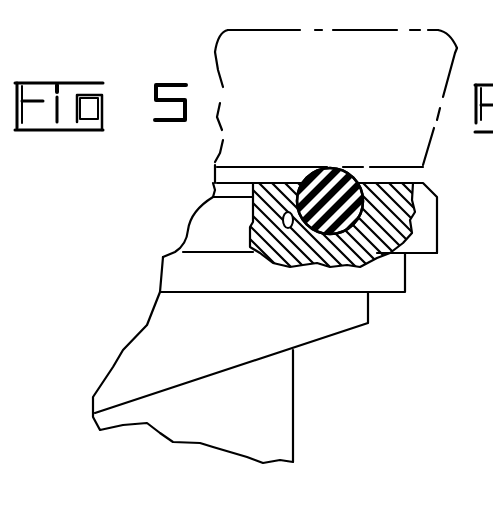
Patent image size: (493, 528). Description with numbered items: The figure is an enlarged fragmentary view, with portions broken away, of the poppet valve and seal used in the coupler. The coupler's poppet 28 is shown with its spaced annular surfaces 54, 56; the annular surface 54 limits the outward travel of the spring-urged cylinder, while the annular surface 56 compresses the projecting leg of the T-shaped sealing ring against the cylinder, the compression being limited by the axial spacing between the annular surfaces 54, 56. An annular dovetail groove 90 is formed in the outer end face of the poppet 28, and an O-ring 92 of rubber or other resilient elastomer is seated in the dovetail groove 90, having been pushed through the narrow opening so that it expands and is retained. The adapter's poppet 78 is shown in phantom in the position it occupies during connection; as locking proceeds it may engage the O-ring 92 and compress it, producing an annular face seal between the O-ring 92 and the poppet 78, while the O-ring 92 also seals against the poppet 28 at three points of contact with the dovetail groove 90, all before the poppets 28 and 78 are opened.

The poppet 28 is at (195, 387).
The annular surface 54 is at (405, 268).
The annular surface 56 is at (437, 240).
The poppet 78 is at (213, 151).
The dovetail groove 90 is at (267, 262).
The O-ring 92 is at (330, 172).